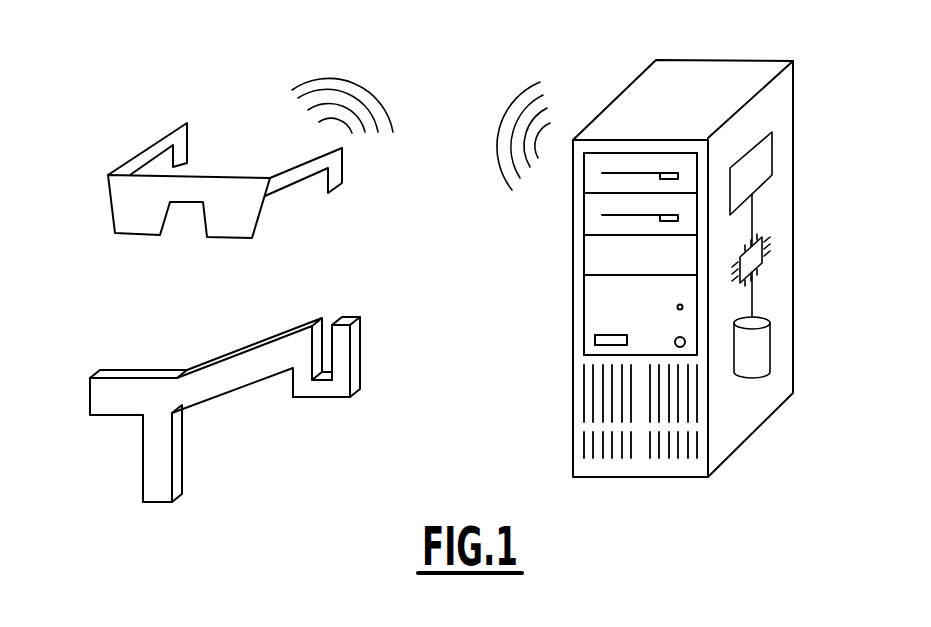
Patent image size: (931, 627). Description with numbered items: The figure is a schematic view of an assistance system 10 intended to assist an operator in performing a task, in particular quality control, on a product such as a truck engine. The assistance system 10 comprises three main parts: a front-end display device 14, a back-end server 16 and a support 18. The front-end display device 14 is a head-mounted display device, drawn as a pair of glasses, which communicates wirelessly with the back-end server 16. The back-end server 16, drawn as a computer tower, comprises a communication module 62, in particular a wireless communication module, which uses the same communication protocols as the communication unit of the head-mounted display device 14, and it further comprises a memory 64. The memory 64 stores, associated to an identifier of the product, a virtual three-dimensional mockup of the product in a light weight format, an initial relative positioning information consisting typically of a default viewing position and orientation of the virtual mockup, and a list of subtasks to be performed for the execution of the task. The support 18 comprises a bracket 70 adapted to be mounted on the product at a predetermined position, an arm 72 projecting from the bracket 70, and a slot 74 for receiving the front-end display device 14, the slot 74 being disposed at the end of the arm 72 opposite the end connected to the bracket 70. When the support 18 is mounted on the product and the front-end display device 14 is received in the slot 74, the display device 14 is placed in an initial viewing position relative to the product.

The assistance system 10 is at (255, 121).
The front-end display device 14 is at (371, 163).
The back-end server 16 is at (656, 255).
The support 18 is at (258, 388).
The communication module 62 is at (757, 163).
The memory 64 is at (757, 348).
The bracket 70 is at (117, 398).
The arm 72 is at (232, 370).
The slot 74 is at (340, 345).